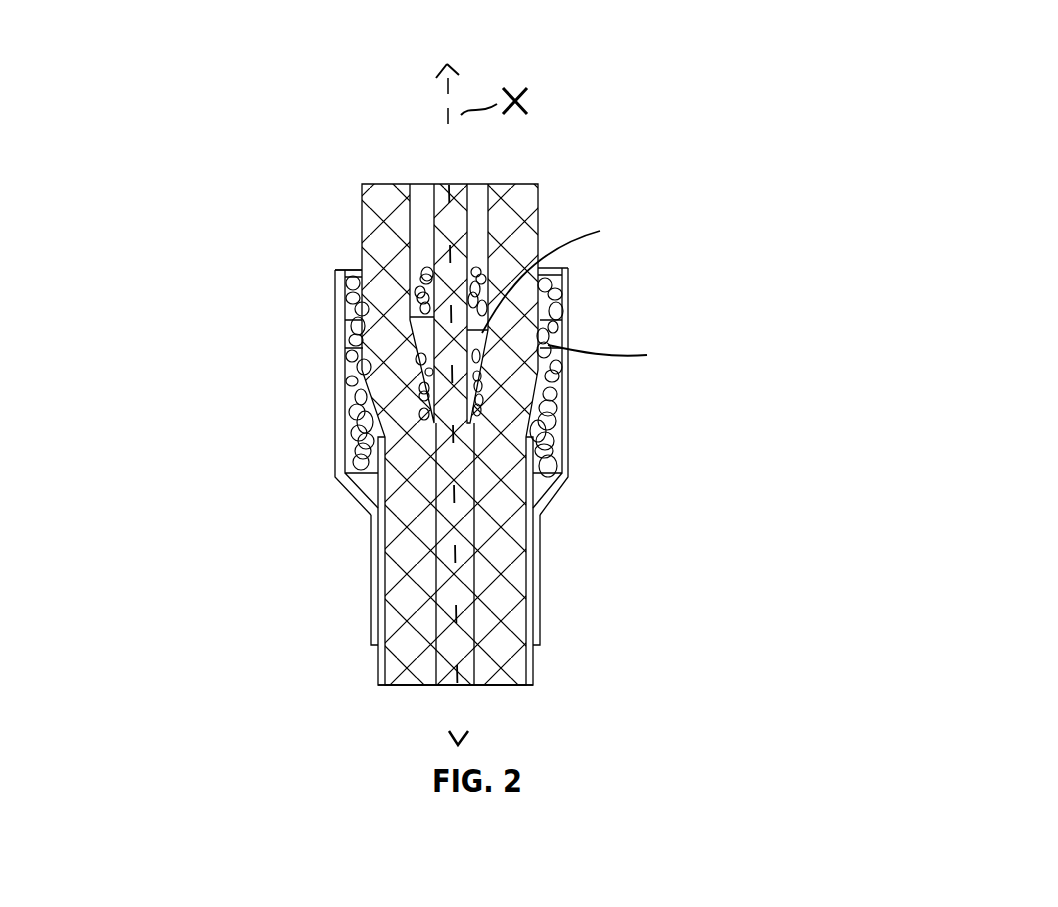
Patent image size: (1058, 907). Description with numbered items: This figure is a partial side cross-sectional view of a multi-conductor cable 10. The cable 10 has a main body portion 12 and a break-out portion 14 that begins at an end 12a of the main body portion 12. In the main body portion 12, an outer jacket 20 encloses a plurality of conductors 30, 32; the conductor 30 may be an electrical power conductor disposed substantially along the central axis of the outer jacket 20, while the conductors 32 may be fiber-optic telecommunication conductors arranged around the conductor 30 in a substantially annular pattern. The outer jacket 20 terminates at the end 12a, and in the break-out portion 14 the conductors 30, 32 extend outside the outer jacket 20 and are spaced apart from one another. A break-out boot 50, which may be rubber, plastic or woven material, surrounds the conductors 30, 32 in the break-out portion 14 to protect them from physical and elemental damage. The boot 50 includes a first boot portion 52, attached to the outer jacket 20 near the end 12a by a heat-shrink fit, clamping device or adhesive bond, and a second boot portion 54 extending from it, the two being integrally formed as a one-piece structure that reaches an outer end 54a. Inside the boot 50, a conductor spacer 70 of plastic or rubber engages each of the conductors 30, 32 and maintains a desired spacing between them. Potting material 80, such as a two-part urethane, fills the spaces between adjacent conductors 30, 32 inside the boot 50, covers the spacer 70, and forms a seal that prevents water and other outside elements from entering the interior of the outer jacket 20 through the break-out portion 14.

The multi-conductor cable 10 is at (614, 66).
The main body portion 12 is at (118, 697).
The end of the main body portion 12a is at (410, 434).
The break-out portion 14 is at (124, 195).
The outer jacket 20 is at (536, 662).
The electrical power conductor 30 is at (462, 184).
The fiber-optic telecommunication conductors 32 is at (385, 190).
The break-out boot 50 is at (558, 490).
The first boot portion 52 is at (368, 542).
The second boot portion 54 is at (336, 400).
The outer end of the boot 54a is at (337, 270).
The conductor spacer 70 is at (547, 336).
The potting material 80 is at (562, 413).